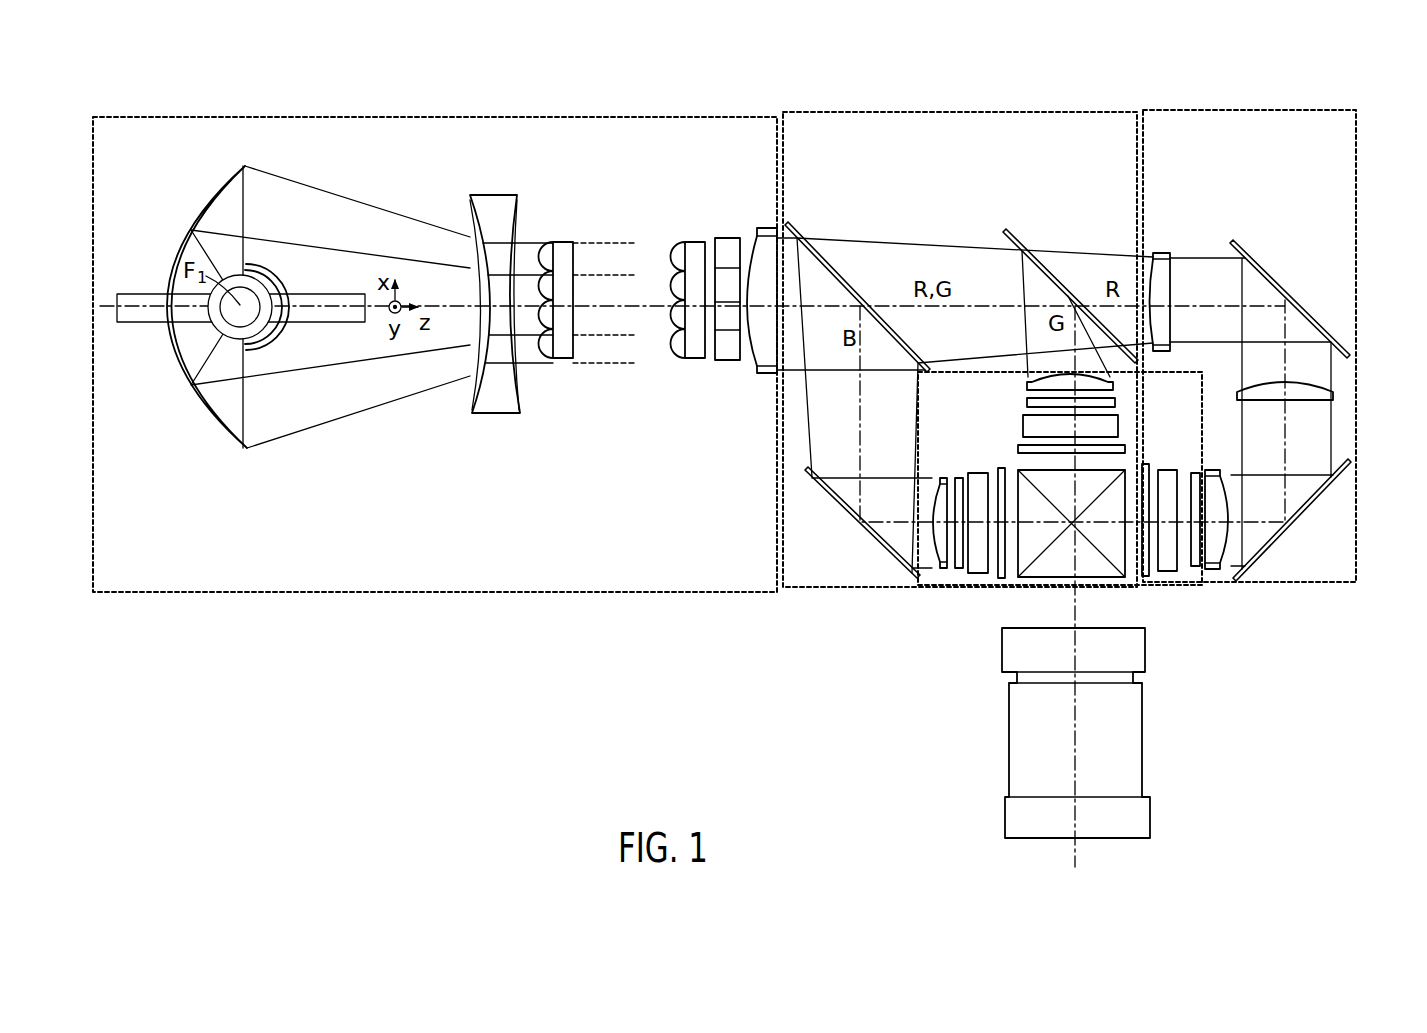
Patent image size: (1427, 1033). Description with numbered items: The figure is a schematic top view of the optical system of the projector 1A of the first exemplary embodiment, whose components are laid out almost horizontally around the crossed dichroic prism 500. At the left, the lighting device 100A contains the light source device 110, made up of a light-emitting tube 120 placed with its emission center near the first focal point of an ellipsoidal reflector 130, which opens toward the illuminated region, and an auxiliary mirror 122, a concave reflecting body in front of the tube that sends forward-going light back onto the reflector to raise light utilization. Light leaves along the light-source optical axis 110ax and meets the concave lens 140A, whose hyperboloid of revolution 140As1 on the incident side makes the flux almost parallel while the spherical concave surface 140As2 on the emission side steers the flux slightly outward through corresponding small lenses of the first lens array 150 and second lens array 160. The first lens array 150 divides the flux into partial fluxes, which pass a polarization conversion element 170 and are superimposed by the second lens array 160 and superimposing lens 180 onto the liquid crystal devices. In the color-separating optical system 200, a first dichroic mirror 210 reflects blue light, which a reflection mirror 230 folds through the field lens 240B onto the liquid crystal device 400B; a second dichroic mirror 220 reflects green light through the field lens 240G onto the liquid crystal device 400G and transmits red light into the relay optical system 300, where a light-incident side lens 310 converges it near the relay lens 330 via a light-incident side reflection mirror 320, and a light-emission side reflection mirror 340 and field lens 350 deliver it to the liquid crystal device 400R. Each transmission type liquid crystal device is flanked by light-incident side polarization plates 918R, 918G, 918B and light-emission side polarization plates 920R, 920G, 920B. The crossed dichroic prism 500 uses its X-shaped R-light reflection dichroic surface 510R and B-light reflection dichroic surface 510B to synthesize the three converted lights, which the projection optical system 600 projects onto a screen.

The projector 1A is at (1098, 83).
The lighting device 100A is at (408, 112).
The light source device 110 is at (286, 352).
The light-source optical axis 110ax is at (133, 324).
The light-emitting tube 120 is at (239, 339).
The auxiliary mirror 122 is at (263, 349).
The ellipsoidal reflector 130 is at (212, 430).
The concave lens 140A is at (500, 416).
The hyperboloid of revolution 140As1 is at (470, 210).
The concave surface 140As2 is at (519, 215).
The first lens array 150 is at (565, 360).
The second lens array 160 is at (690, 360).
The polarization conversion element 170 is at (728, 238).
The superimposing lens 180 is at (768, 375).
The color-separating optical system 200 is at (944, 107).
The first dichroic mirror 210 is at (822, 258).
The second dichroic mirror 220 is at (1018, 240).
The reflection mirror 230 is at (818, 492).
The field lens 240B is at (943, 572).
The field lens 240G is at (1115, 384).
The relay optical system 300 is at (1226, 109).
The light-incident side lens 310 is at (1160, 253).
The light-incident side reflection mirror 320 is at (1254, 258).
The relay lens 330 is at (1336, 391).
The light-emission side reflection mirror 340 is at (1347, 461).
The field lens 350 is at (1217, 570).
The liquid crystal device 400B is at (982, 478).
The liquid crystal device 400G is at (1118, 424).
The liquid crystal device 400R is at (1168, 573).
The crossed dichroic prism 500 is at (1035, 577).
The B-light reflection dichroic surface 510B is at (1100, 560).
The R-light reflection dichroic surface 510R is at (1110, 472).
The projection optical system 600 is at (1008, 742).
The light-incident side polarization plate 918B is at (960, 571).
The light-incident side polarization plate 918G is at (1027, 403).
The light-incident side polarization plate 918R is at (1197, 570).
The light-emission side polarization plate 920B is at (1002, 580).
The light-emission side polarization plate 920G is at (1027, 446).
The light-emission side polarization plate 920R is at (1147, 580).